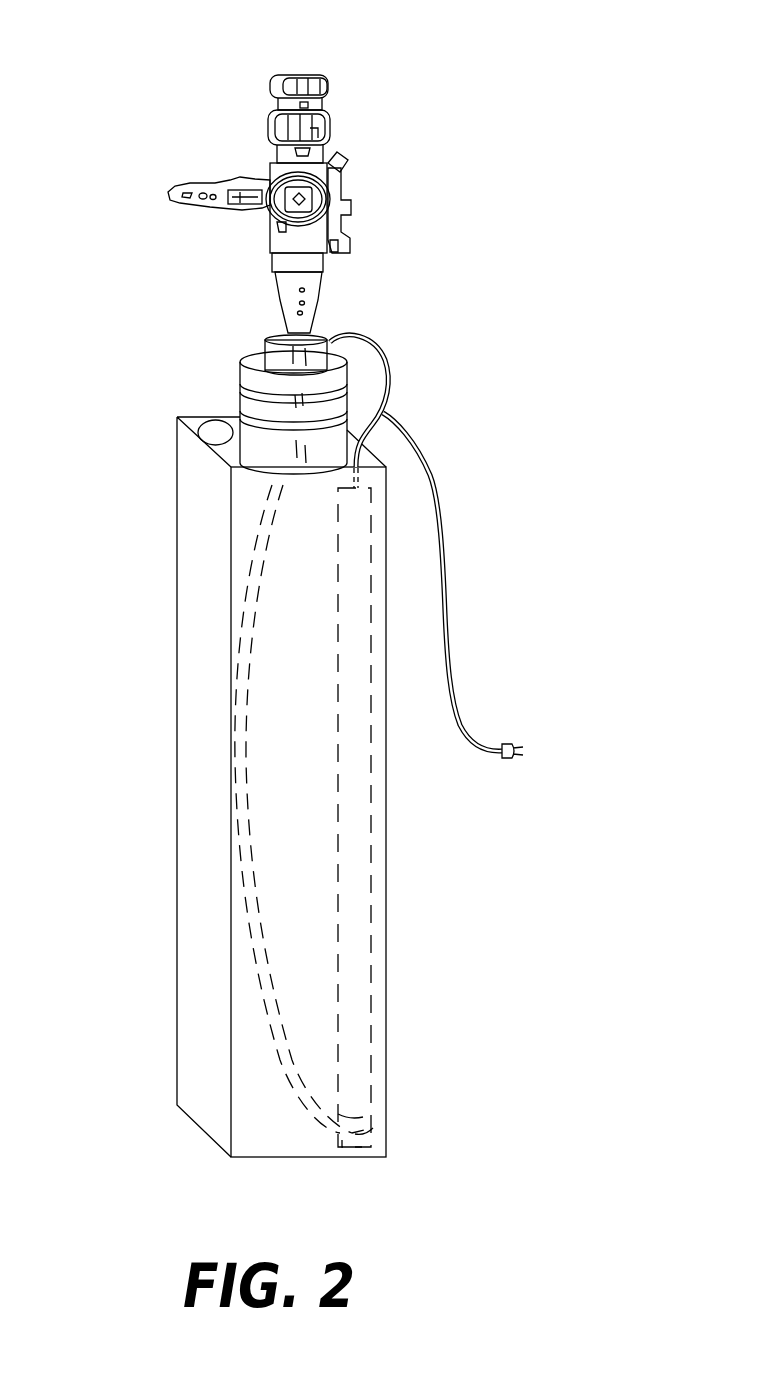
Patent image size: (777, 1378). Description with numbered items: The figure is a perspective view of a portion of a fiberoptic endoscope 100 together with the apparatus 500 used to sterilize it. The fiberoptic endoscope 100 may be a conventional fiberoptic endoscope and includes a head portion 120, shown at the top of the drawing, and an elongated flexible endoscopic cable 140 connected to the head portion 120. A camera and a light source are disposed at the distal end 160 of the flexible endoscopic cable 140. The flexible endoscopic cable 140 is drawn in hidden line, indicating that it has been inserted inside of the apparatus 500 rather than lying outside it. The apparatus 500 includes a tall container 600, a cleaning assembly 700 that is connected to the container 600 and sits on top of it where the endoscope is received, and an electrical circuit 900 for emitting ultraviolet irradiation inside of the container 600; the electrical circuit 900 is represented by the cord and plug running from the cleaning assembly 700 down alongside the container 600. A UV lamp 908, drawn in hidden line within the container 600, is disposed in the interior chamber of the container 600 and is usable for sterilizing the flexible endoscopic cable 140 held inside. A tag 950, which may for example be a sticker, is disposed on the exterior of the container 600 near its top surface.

The fiberoptic endoscope 100 is at (396, 80).
The head portion 120 is at (325, 250).
The elongated flexible endoscopic cable 140 is at (260, 587).
The distal end 160 is at (370, 1120).
The apparatus 500 is at (538, 326).
The container 600 is at (149, 687).
The cleaning assembly 700 is at (213, 350).
The electrical circuit 900 is at (462, 488).
The UV lamp 908 is at (370, 938).
The tag 950 is at (212, 434).